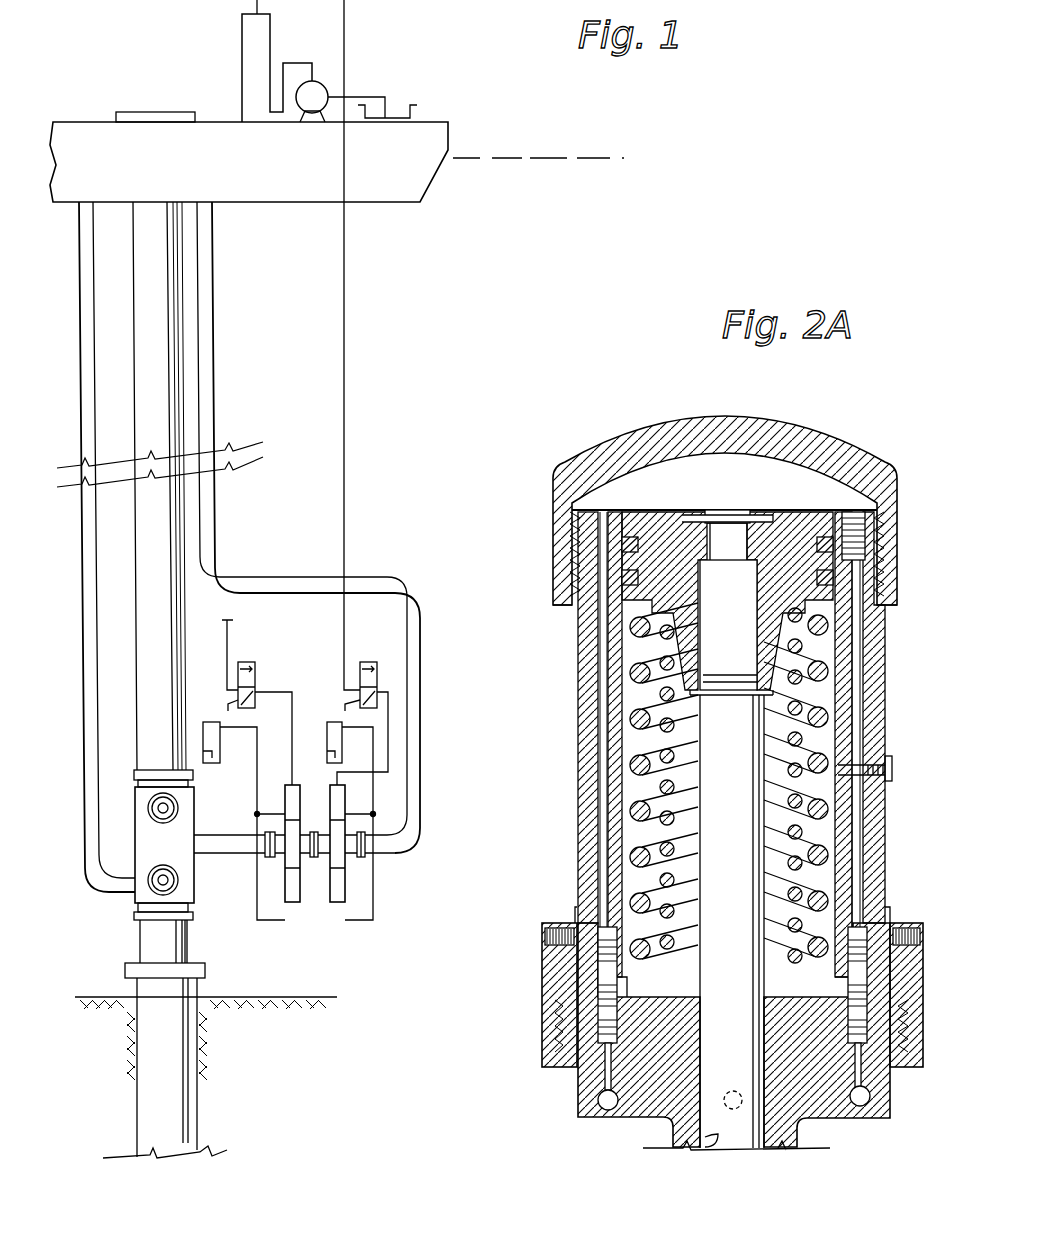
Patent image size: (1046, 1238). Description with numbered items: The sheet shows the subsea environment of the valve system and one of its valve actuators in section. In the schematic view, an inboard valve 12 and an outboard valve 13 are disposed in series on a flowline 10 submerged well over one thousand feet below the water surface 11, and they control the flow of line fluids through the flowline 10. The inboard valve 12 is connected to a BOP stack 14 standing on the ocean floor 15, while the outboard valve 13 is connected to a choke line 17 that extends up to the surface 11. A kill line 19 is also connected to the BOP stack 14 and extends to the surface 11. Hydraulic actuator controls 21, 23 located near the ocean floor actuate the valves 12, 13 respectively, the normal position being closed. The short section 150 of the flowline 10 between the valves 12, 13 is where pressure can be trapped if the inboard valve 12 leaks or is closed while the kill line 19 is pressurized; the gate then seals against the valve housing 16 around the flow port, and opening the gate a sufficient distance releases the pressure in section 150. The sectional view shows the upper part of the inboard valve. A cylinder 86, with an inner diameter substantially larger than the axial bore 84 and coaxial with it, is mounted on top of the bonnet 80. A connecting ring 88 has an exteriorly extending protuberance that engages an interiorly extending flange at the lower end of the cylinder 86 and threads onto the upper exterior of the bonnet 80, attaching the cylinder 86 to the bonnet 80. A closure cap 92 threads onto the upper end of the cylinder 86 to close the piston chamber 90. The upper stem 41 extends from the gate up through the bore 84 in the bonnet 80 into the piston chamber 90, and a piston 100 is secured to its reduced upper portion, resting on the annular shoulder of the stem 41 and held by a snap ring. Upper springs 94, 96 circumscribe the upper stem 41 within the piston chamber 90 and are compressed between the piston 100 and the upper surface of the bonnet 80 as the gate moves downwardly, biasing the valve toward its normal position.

In FIG. 1, the flowline 10 is at (225, 845).
In FIG. 1, the water surface 11 is at (528, 157).
In FIG. 1, the inboard valve 12 is at (303, 893).
In FIG. 1, the outboard valve 13 is at (328, 893).
In FIG. 1, the BOP stack 14 is at (142, 825).
In FIG. 1, the ocean floor 15 is at (243, 997).
In FIG. 1, the valve housing 16 is at (138, 400).
In FIG. 1, the choke line 17 is at (207, 378).
In FIG. 1, the kill line 19 is at (87, 577).
In FIG. 1, the hydraulic actuator control 21 is at (357, 774).
In FIG. 1, the hydraulic actuator control 23 is at (247, 770).
In FIG. 1, the section of flowline 150 is at (323, 843).
In FIG. 2A, the upper stem 41 is at (740, 1137).
In FIG. 2A, the bonnet 80 is at (576, 1096).
In FIG. 2A, the bore 84 is at (717, 1150).
In FIG. 2A, the cylinder 86 is at (583, 683).
In FIG. 2A, the connecting ring 88 is at (545, 990).
In FIG. 2A, the piston chamber 90 is at (630, 650).
In FIG. 2A, the closure cap 92 is at (620, 430).
In FIG. 2A, the upper spring 94 is at (660, 746).
In FIG. 2A, the upper spring 96 is at (630, 768).
In FIG. 2A, the piston 100 is at (793, 520).